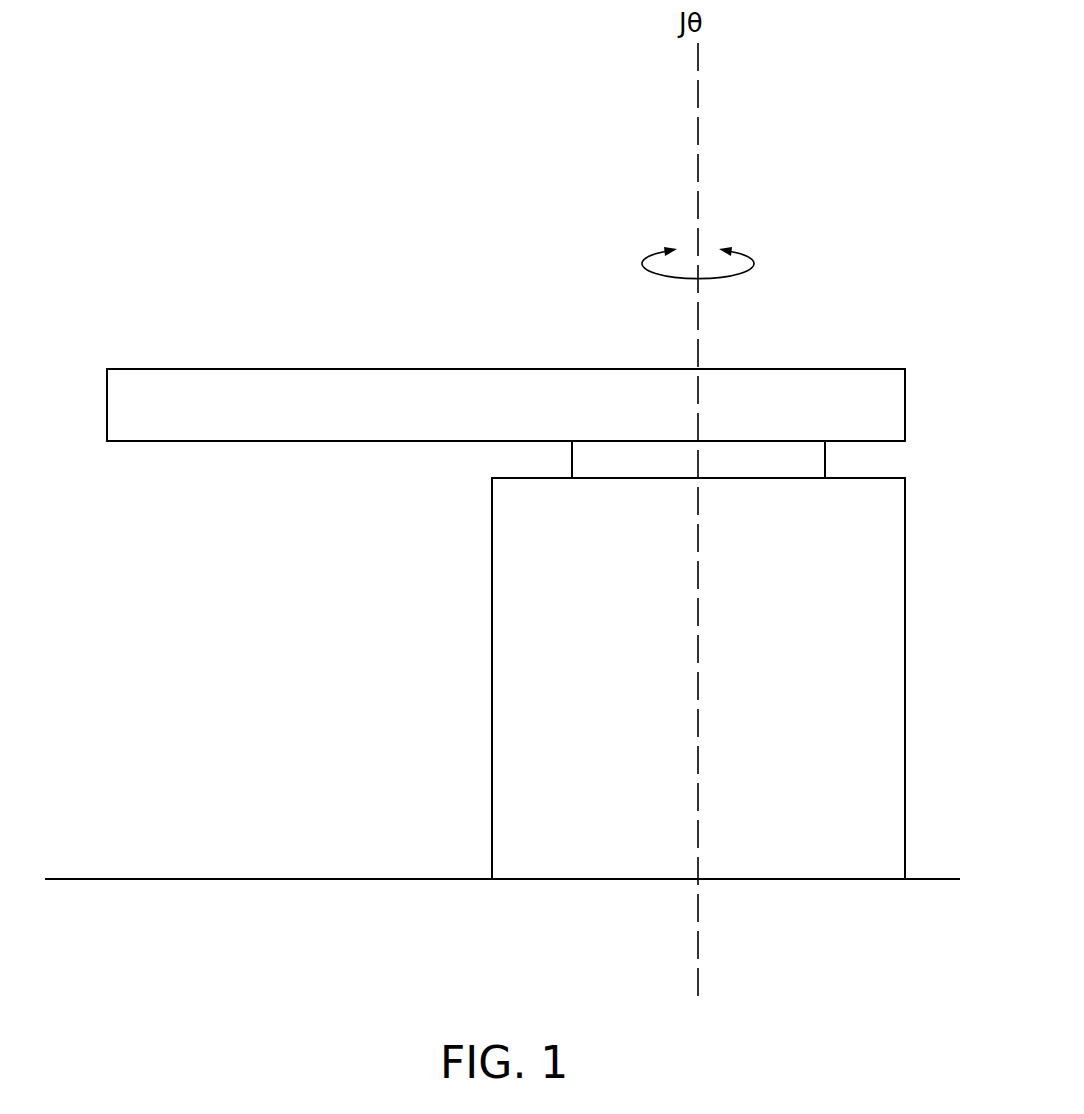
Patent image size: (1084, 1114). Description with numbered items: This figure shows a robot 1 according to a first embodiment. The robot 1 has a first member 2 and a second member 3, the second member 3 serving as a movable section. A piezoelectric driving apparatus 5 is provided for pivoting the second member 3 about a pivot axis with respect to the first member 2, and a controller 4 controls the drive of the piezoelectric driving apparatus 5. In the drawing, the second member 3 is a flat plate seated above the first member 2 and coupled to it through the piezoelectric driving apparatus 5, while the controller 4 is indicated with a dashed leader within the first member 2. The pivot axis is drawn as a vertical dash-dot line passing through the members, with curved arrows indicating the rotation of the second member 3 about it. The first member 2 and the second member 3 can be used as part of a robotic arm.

The robot 1 is at (282, 340).
The first member 2 is at (552, 627).
The second member 3 is at (421, 402).
The controller 4 is at (613, 750).
The piezoelectric driving apparatus 5 is at (636, 458).